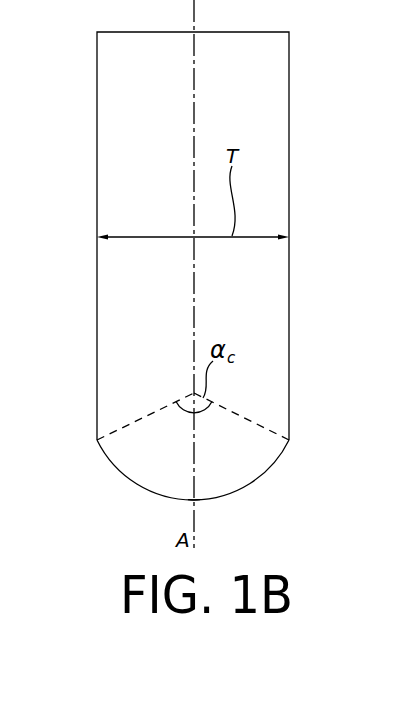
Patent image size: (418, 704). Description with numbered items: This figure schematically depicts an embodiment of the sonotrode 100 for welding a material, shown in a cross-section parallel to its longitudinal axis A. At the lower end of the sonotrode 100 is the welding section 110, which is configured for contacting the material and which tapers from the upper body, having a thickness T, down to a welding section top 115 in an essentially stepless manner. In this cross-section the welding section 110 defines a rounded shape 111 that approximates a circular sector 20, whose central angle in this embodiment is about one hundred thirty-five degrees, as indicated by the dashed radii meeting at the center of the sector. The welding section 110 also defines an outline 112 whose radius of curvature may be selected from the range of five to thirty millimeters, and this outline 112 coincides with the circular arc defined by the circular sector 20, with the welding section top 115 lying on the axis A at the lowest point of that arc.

The sonotrode 100 is at (315, 289).
The welding section 110 is at (312, 452).
The outline 112 is at (103, 471).
The circular sector 20 is at (145, 470).
The rounded shape 111 is at (241, 465).
The welding section top 115 is at (206, 511).